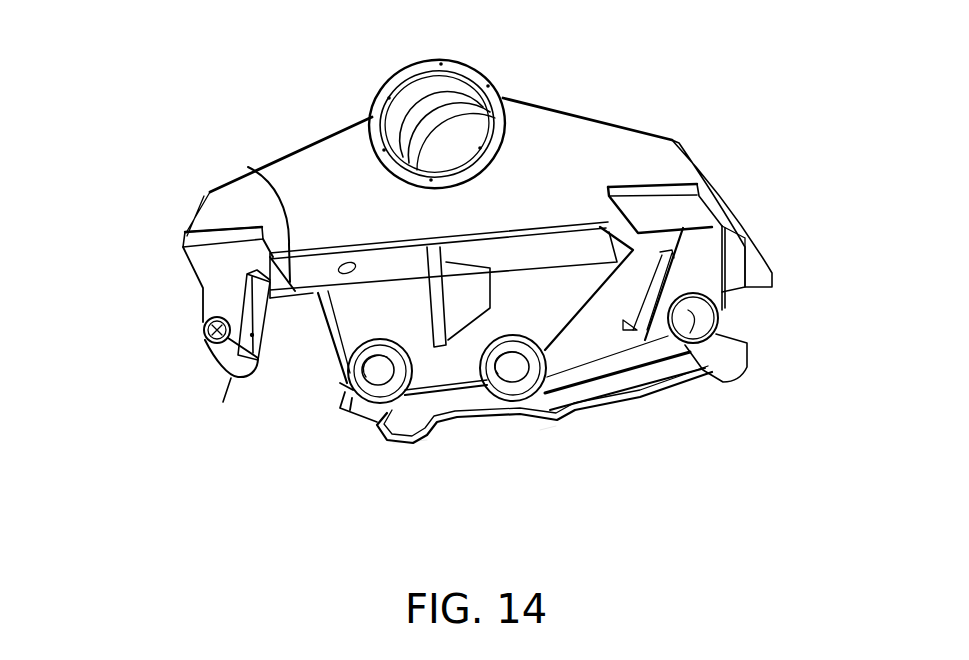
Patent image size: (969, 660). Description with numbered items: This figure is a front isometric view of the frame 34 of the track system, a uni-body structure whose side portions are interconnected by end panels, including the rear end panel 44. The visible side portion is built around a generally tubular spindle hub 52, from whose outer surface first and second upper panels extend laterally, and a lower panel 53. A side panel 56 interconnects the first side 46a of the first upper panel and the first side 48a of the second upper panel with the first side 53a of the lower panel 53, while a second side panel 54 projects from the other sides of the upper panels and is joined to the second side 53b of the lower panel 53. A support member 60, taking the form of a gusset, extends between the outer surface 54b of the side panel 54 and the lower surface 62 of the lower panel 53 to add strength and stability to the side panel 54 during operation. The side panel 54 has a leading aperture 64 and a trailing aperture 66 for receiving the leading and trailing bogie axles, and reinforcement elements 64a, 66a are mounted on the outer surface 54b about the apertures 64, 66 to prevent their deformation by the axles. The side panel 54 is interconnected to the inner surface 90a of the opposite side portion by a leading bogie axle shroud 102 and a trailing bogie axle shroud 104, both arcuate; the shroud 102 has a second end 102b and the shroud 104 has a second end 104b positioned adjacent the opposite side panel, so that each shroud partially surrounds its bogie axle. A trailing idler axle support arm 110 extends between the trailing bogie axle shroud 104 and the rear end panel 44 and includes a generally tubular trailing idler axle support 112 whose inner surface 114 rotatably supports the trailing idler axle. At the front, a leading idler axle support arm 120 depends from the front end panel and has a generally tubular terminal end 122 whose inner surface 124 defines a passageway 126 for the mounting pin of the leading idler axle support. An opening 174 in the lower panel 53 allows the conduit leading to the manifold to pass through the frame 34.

The frame 34 is at (211, 488).
The rear end panel 44 is at (694, 164).
The first side of first upper panel 46a is at (520, 97).
The first side of second upper panel 48a is at (352, 126).
The spindle hub 52 is at (409, 81).
The lower panel 53 is at (698, 211).
The first side of lower panel 53a is at (258, 170).
The second side of lower panel 53b is at (552, 255).
The side panel 54 is at (390, 318).
The outer surface of side panel 54b is at (352, 344).
The side panel 56 is at (376, 202).
The support member 60 is at (433, 287).
The lower surface of lower panel 62 is at (453, 257).
The leading aperture 64 is at (345, 412).
The reinforcement element 64a is at (348, 380).
The trailing aperture 66 is at (608, 370).
The reinforcement element 66a is at (510, 412).
The inner surface 90a is at (480, 407).
The leading bogie axle shroud 102 is at (382, 442).
The second end of leading bogie axle shroud 102b is at (430, 444).
The trailing bogie axle shroud 104 is at (540, 423).
The second end of trailing bogie axle shroud 104b is at (557, 424).
The trailing idler axle support arm 110 is at (737, 268).
The trailing idler axle support 112 is at (735, 353).
The inner surface of trailing idler axle support 114 is at (717, 315).
The leading idler axle support arm 120 is at (203, 288).
The terminal end 122 is at (220, 351).
The inner surface of terminal end 124 is at (231, 378).
The passageway 126 is at (204, 328).
The opening 174 is at (350, 264).